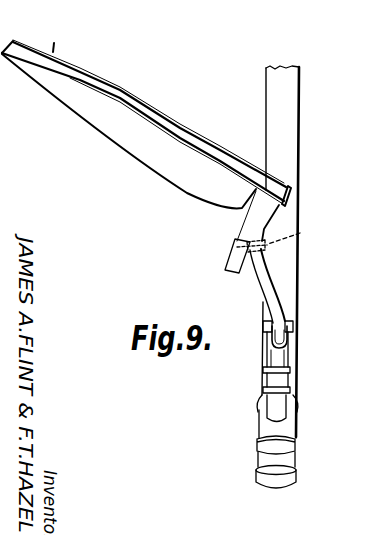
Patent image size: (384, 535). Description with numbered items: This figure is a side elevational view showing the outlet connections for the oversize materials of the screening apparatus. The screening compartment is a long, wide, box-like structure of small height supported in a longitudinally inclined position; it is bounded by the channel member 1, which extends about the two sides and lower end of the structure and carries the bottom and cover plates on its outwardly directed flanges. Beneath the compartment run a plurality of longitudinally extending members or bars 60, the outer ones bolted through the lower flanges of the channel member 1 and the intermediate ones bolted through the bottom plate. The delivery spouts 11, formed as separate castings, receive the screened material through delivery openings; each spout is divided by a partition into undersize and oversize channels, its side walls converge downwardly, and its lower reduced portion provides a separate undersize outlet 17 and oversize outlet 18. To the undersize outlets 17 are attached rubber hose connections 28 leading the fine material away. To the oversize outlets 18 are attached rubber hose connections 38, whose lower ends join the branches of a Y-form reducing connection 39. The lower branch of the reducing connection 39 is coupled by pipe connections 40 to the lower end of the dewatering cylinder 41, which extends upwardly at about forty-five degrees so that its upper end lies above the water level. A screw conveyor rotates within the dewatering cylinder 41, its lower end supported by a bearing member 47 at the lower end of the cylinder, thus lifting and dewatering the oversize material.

The channel member 1 is at (138, 115).
The longitudinally extending bar 60 is at (97, 126).
The dewatering cylinder 41 is at (279, 86).
The delivery spout 11 is at (258, 210).
The undersize outlet 17 is at (235, 242).
The oversize outlet 18 is at (300, 233).
The rubber hose connection 28 is at (229, 263).
The rubber hose connection 38 is at (274, 297).
The reducing connection 39 is at (276, 358).
The pipe connection 40 is at (265, 389).
The bearing member 47 is at (283, 478).